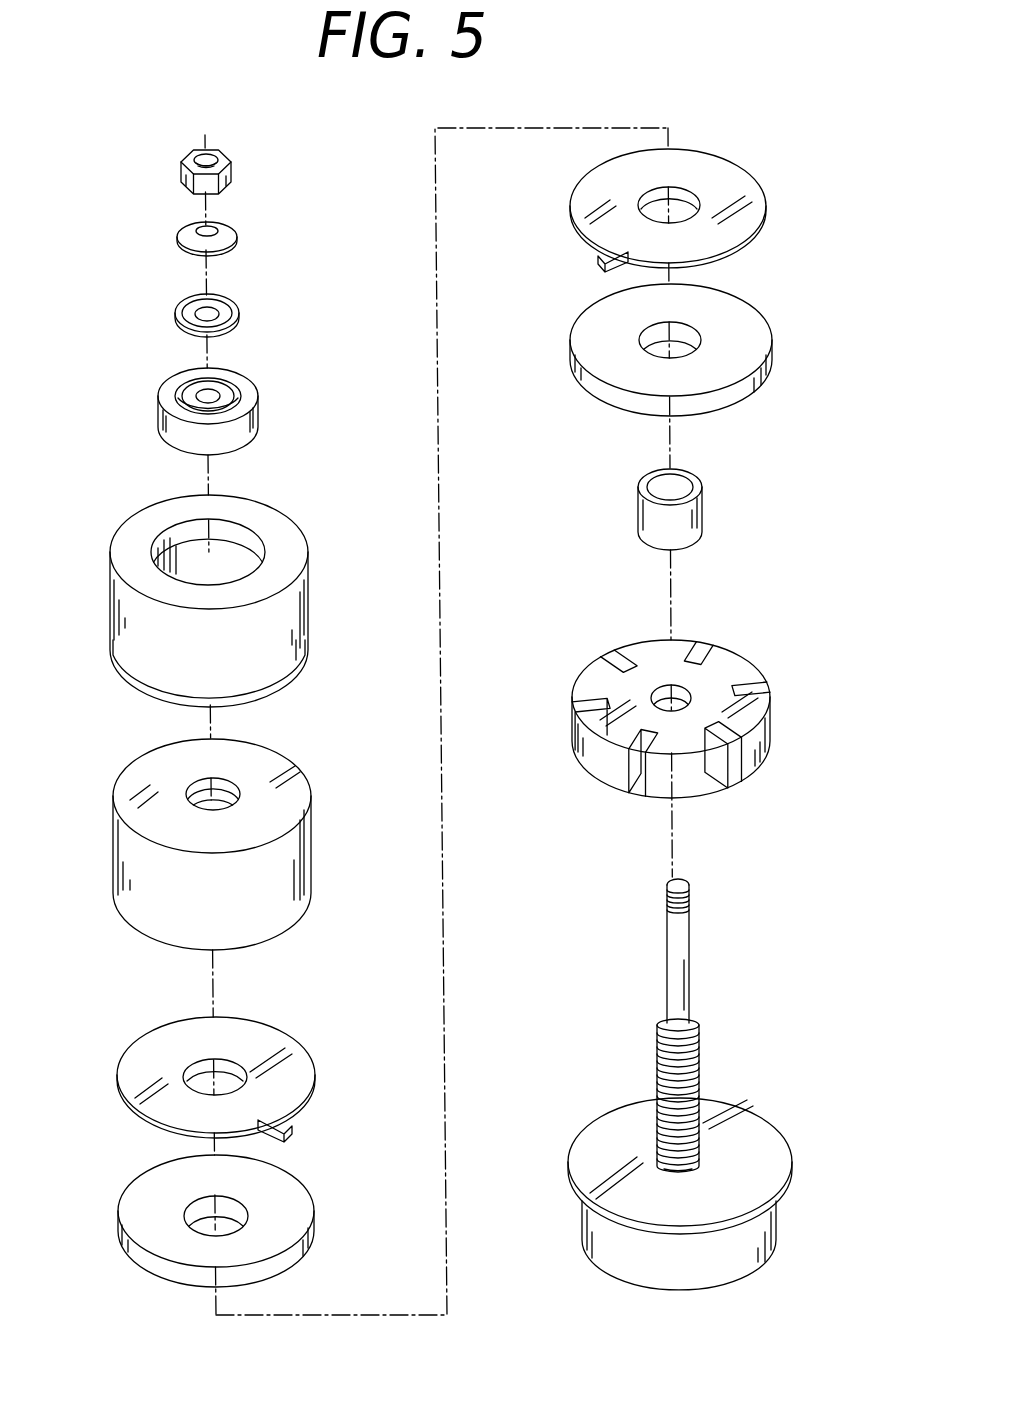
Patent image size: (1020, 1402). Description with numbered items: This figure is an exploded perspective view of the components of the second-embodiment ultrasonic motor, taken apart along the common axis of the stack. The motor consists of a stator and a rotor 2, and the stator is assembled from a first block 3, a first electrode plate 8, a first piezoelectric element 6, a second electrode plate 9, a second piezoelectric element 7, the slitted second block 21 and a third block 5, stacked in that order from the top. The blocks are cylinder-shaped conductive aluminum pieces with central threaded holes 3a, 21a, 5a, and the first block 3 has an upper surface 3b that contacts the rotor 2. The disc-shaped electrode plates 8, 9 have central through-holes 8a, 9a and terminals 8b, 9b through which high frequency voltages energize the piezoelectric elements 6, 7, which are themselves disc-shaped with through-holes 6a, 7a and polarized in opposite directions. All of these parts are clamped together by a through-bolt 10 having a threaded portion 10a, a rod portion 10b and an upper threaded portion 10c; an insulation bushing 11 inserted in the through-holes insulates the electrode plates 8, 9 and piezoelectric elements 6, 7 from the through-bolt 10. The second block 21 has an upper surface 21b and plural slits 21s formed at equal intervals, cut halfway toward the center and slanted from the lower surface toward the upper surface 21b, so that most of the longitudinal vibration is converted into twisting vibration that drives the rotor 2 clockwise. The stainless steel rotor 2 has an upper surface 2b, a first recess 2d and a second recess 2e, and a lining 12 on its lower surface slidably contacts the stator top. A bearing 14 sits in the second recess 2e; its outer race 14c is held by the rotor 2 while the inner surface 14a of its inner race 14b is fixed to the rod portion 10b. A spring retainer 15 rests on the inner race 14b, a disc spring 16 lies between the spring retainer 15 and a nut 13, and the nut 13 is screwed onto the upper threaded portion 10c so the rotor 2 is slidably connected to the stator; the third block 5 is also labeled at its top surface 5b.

The nut 13 is at (233, 172).
The disc spring 16 is at (233, 236).
The spring retainer 15 is at (239, 310).
The bearing 14 is at (195, 397).
The inner surface of the inner race 14a is at (222, 392).
The inner race 14b is at (188, 393).
The outer race 14c is at (165, 398).
The rotor 2 is at (201, 587).
The upper surface 2b is at (280, 528).
The first recess 2d is at (178, 538).
The second recess 2e is at (190, 573).
The lining 12 is at (148, 690).
The first block 3 is at (202, 829).
The threaded hole 3a is at (225, 785).
The upper surface 3b is at (128, 780).
The first electrode plate 8 is at (210, 1082).
The through-hole 8a is at (190, 1070).
The terminal 8b is at (290, 1135).
The first piezoelectric element 6 is at (212, 1221).
The through-hole 6a is at (195, 1206).
The second electrode plate 9 is at (650, 215).
The through-hole 9a is at (648, 196).
The terminal 9b is at (600, 264).
The second piezoelectric element 7 is at (655, 350).
The through-hole 7a is at (648, 334).
The insulation bushing 11 is at (698, 514).
The second block 21 is at (695, 726).
The threaded hole 21a is at (688, 690).
The upper surface 21b is at (694, 646).
The slits 21s is at (744, 765).
The through-bolt 10 is at (660, 1024).
The threaded portion 10a is at (659, 1048).
The rod portion 10b is at (668, 942).
The upper threaded portion 10c is at (668, 895).
The third block 5 is at (693, 1192).
The threaded hole 5a is at (688, 1168).
The top surface of base 5b is at (772, 1140).